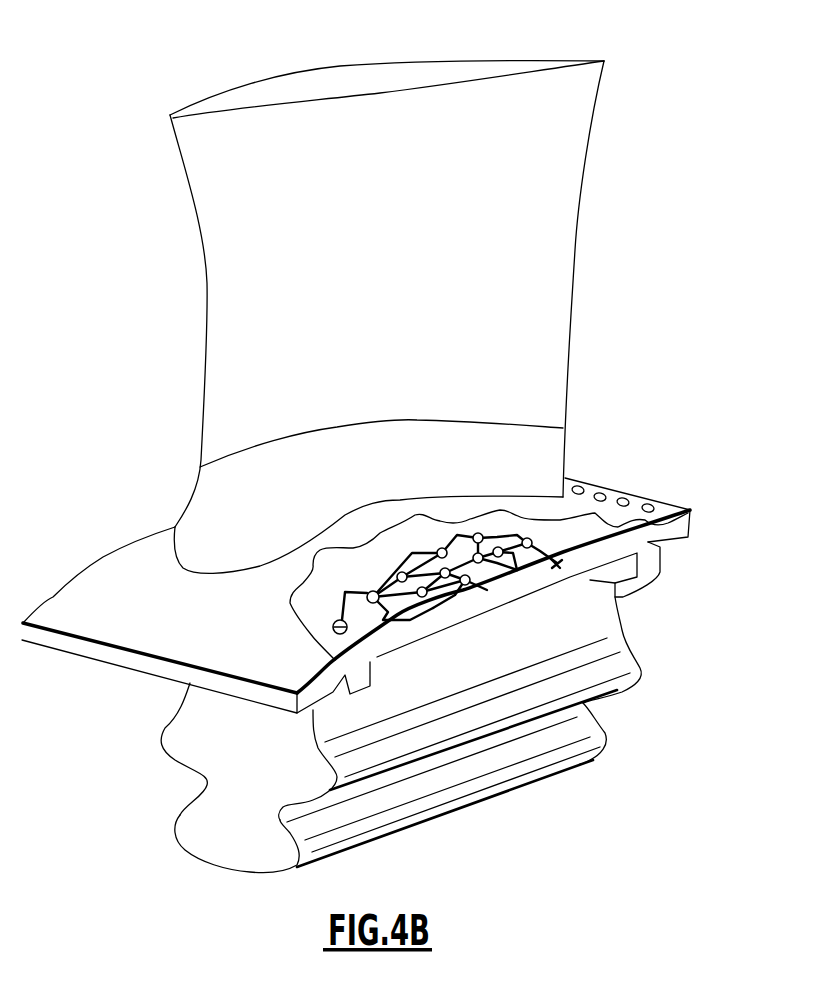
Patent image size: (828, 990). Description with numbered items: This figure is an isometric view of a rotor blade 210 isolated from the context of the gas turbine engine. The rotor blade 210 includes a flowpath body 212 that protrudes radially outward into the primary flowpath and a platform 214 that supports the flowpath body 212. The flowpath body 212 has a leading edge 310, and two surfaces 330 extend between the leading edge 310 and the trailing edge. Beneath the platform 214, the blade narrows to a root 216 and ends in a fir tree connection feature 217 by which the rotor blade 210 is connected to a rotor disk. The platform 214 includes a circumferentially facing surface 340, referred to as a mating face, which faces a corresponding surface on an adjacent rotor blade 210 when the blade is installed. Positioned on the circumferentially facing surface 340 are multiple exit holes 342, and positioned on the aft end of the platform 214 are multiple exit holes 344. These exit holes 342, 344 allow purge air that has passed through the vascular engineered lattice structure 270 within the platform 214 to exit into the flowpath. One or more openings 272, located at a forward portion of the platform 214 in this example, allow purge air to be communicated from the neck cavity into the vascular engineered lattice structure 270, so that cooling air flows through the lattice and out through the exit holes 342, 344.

The rotor blade 210 is at (652, 223).
The flowpath body 212 is at (550, 366).
The platform 214 is at (673, 526).
The root 216 is at (587, 607).
The fir tree connection feature 217 is at (583, 727).
The vascular engineered lattice structure 270 is at (444, 592).
The openings 272 is at (347, 628).
The leading edge 310 is at (178, 155).
The surfaces 330 is at (279, 73).
The circumferentially facing surface 340 is at (647, 541).
The exit holes 342 is at (513, 570).
The exit holes 344 is at (626, 501).